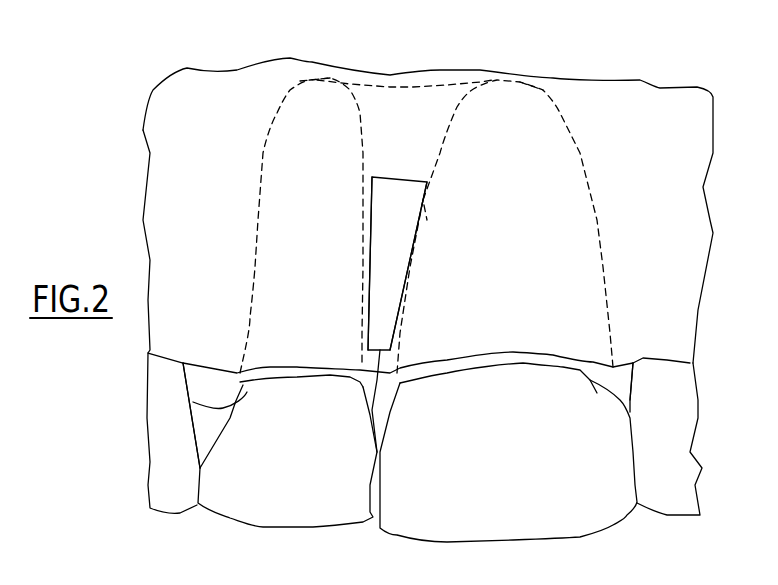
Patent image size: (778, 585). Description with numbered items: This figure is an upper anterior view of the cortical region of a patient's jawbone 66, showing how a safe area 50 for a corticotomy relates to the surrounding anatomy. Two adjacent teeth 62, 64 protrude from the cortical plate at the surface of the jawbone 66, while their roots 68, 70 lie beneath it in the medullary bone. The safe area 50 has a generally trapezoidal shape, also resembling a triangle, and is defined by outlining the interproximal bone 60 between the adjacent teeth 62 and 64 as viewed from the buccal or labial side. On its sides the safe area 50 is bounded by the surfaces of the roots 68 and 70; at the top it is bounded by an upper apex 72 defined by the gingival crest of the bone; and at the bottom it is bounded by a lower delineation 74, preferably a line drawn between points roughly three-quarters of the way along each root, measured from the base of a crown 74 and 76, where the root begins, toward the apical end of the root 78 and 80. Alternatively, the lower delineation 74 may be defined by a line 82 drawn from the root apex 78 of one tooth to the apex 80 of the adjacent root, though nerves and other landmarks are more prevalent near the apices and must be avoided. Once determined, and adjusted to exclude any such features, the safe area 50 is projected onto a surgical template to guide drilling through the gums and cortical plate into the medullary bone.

The safe area 50 is at (397, 255).
The interproximal bone 60 is at (413, 153).
The tooth 62 is at (265, 492).
The tooth 64 is at (575, 508).
The jawbone 66 is at (673, 108).
The root 68 is at (365, 260).
The root 70 is at (390, 273).
The upper apex 72 is at (367, 400).
The lower delineation 74 is at (383, 175).
The base of a crown 76 is at (605, 400).
The apical end of the root 78 is at (313, 80).
The apical end of the root 80 is at (547, 90).
The line 82 is at (412, 87).